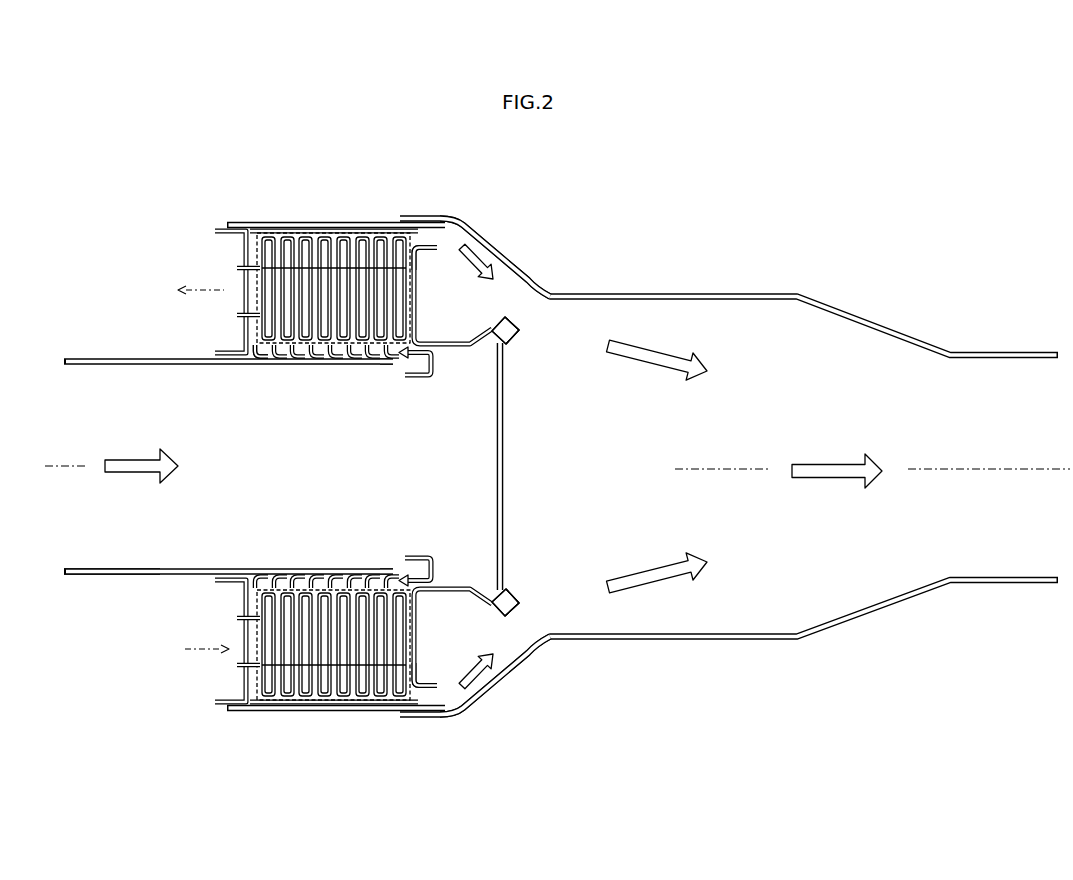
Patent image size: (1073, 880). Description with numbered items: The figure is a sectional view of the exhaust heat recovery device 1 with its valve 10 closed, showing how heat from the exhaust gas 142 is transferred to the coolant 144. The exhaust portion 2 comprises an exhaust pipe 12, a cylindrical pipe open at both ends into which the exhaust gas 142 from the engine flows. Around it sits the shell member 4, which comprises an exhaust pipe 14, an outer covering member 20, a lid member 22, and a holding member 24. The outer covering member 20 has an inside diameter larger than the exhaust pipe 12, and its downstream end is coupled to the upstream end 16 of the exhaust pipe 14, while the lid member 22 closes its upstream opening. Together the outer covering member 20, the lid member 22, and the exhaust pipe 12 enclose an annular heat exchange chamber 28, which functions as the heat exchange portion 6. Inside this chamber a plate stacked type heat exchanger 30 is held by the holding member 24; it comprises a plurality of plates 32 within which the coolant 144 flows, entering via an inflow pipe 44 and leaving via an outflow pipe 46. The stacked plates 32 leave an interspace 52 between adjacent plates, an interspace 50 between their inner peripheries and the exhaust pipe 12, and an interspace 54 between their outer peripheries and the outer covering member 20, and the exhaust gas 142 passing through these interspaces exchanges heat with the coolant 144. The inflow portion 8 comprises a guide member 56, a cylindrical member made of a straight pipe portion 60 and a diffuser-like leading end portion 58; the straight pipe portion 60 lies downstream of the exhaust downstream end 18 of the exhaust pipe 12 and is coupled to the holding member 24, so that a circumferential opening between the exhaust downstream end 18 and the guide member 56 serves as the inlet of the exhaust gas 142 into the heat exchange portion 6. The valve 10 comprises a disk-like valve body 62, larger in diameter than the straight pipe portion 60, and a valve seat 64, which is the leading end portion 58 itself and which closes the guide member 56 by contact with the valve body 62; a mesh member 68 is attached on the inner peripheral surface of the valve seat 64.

The exhaust heat recovery device 1 is at (626, 193).
The exhaust portion 2 is at (118, 600).
The shell member 4 is at (224, 195).
The heat exchange portion 6 is at (270, 360).
The inflow portion 8 is at (433, 366).
The valve 10 is at (509, 410).
The exhaust pipe 12 is at (104, 356).
The exhaust pipe 14 is at (770, 292).
The upstream end 16 is at (418, 206).
The exhaust downstream end 18 is at (386, 375).
The outer covering member 20 is at (266, 222).
The lid member 22 is at (245, 241).
The holding member 24 is at (437, 228).
The heat exchange chamber 28 is at (328, 214).
The heat exchanger 30 is at (397, 234).
The plate 32 is at (299, 235).
The inflow pipe 44 is at (234, 640).
The outflow pipe 46 is at (240, 314).
The interspace 50 is at (345, 357).
The interspace 52 is at (330, 345).
The interspace 54 is at (370, 228).
The guide member 56 is at (465, 336).
The leading end portion 58 is at (503, 326).
The straight pipe portion 60 is at (432, 343).
The valve body 62 is at (504, 530).
The valve seat 64 is at (505, 466).
The mesh member 68 is at (519, 330).
The exhaust gas 142 is at (493, 466).
The coolant 144 is at (238, 270).